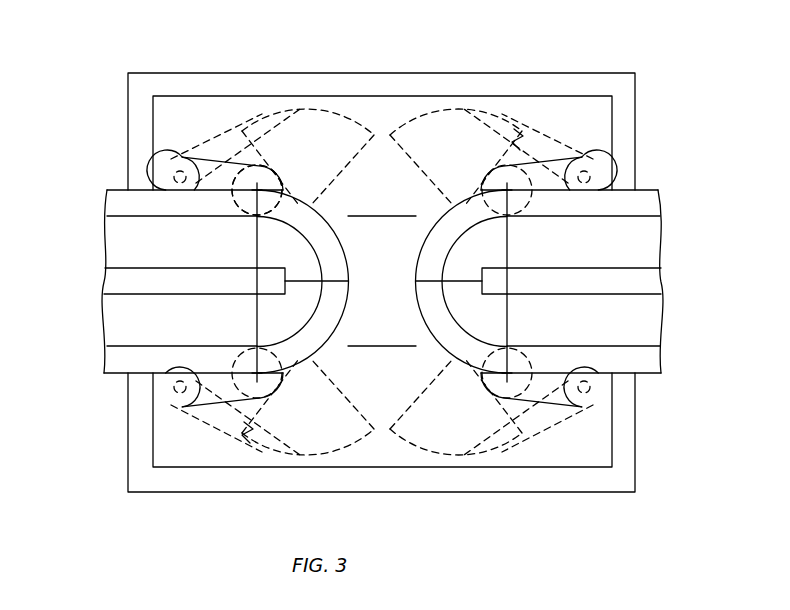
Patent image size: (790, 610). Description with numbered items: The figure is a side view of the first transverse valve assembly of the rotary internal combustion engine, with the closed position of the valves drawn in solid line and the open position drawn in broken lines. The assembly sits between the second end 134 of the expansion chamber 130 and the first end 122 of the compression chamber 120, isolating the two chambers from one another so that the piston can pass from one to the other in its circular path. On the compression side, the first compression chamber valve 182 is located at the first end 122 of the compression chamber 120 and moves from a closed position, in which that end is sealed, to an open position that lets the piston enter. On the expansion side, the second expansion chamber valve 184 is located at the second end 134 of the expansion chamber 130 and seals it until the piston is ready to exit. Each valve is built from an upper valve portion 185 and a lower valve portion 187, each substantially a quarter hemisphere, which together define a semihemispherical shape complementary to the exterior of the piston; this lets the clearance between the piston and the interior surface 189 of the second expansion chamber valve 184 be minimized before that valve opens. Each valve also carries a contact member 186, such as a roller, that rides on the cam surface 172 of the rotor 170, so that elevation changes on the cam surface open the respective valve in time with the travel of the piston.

The compression chamber 120 is at (110, 243).
The first end of the compression chamber 122 is at (257, 240).
The expansion chamber 130 is at (658, 233).
The second end of the expansion chamber 134 is at (507, 240).
The rotor 170 is at (118, 288).
The cam surface 172 is at (392, 215).
The first compression chamber valve 182 is at (163, 163).
The second expansion chamber valve 184 is at (602, 152).
The upper valve portion 185 is at (319, 207).
The contact member 186 is at (317, 211).
The lower valve portion 187 is at (342, 325).
The interior surface 189 is at (283, 337).